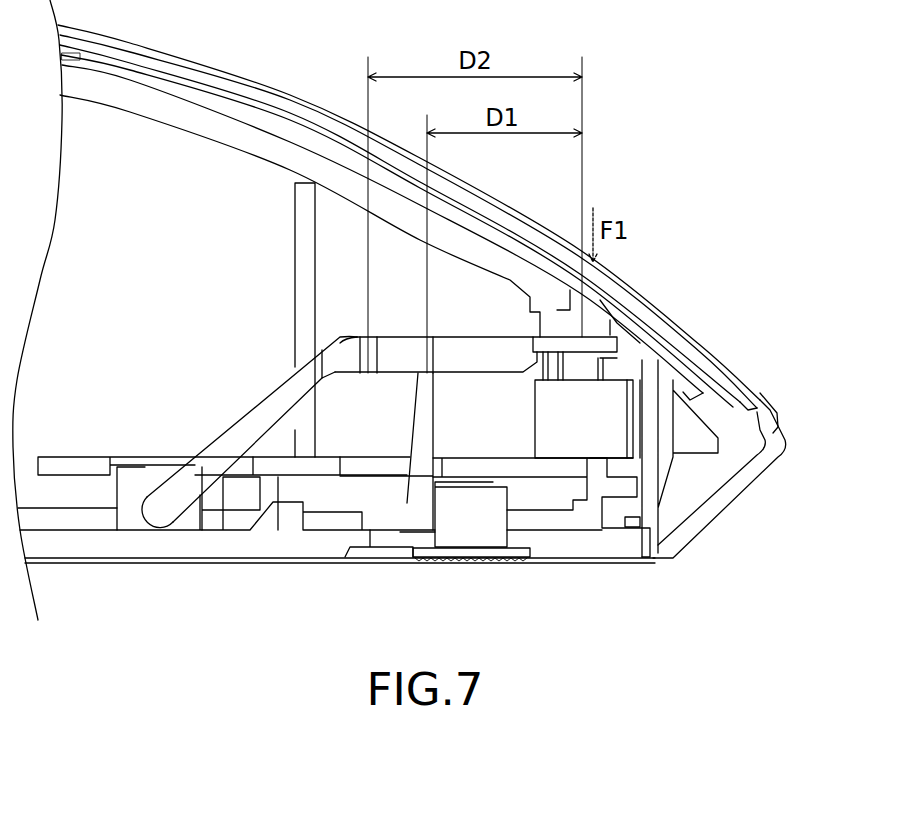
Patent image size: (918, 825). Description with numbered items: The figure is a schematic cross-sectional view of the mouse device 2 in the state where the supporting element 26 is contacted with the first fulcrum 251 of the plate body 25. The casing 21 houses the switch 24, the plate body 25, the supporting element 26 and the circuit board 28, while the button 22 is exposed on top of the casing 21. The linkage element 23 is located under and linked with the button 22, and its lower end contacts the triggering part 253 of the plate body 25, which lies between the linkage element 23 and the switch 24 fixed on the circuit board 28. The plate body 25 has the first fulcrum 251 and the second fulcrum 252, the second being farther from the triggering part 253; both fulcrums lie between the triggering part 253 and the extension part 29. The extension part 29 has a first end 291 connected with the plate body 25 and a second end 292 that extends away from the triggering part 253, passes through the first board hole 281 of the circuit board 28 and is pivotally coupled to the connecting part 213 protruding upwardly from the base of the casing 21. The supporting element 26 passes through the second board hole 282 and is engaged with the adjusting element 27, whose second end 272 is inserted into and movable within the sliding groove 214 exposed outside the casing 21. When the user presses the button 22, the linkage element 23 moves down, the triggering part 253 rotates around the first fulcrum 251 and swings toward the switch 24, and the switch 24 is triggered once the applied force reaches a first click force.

The mouse device 2 is at (742, 61).
The casing 21 is at (773, 420).
The button 22 is at (715, 373).
The linkage element 23 is at (590, 312).
The switch 24 is at (598, 420).
The plate body 25 is at (397, 327).
The first fulcrum 251 is at (428, 357).
The second fulcrum 252 is at (360, 333).
The triggering part 253 is at (618, 323).
The supporting element 26 is at (424, 424).
The adjusting element 27 is at (490, 520).
The circuit board 28 is at (521, 475).
The extension part 29 is at (222, 434).
The first end 291 is at (313, 373).
The second end 292 is at (162, 513).
The first board hole 281 is at (157, 462).
The second board hole 282 is at (397, 450).
The connecting part 213 is at (130, 520).
The sliding groove 214 is at (383, 550).
The second end 272 is at (463, 552).